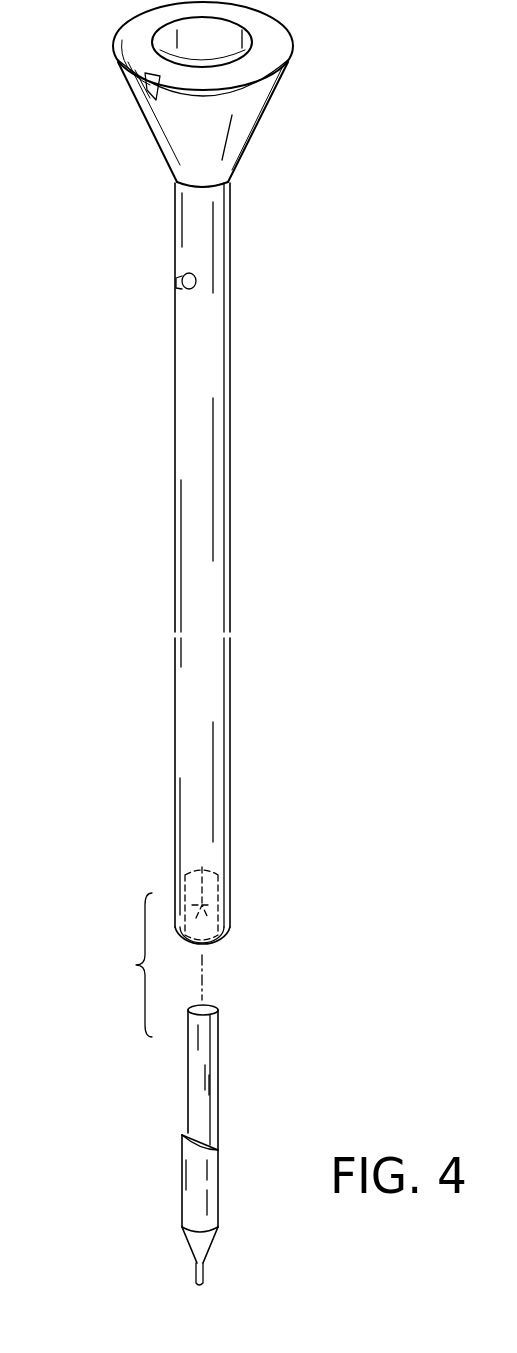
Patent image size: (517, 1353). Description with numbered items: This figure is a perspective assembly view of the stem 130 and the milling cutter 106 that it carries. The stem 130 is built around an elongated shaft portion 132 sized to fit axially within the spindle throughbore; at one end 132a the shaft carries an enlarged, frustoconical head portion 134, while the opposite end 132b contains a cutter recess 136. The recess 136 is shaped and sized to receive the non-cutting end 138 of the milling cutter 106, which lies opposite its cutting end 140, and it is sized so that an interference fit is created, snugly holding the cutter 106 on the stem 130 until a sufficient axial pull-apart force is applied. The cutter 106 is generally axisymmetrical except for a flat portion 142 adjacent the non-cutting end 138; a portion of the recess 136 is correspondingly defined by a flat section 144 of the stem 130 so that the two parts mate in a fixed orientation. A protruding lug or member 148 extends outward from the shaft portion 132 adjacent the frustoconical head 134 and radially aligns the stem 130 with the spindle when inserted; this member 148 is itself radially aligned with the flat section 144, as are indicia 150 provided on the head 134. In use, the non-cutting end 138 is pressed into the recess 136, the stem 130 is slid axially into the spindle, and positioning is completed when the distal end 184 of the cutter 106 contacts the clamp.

The milling cutter 106 is at (193, 1158).
The stem 130 is at (209, 482).
The shaft portion 132 is at (261, 568).
The one end of shaft portion 132a is at (222, 189).
The opposite end of shaft portion 132b is at (227, 935).
The frustoconical head portion 134 is at (209, 94).
The cutter recess 136 is at (213, 905).
The non-cutting end 138 is at (198, 1158).
The cutting end 140 is at (251, 1280).
The flat portion 142 is at (200, 1073).
The flat section 144 is at (170, 887).
The protruding member 148 is at (172, 282).
The indicia 150 is at (148, 86).
The distal end 184 is at (200, 1285).